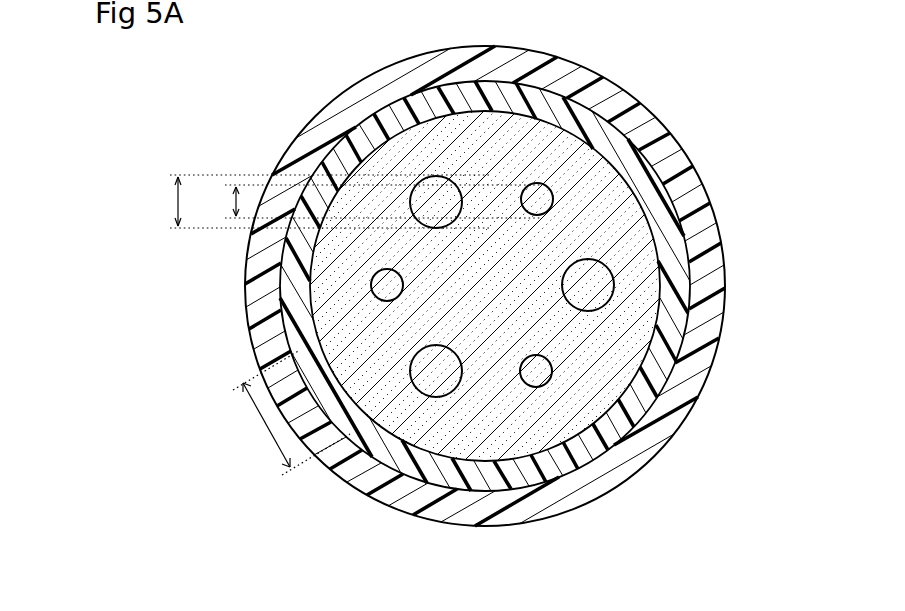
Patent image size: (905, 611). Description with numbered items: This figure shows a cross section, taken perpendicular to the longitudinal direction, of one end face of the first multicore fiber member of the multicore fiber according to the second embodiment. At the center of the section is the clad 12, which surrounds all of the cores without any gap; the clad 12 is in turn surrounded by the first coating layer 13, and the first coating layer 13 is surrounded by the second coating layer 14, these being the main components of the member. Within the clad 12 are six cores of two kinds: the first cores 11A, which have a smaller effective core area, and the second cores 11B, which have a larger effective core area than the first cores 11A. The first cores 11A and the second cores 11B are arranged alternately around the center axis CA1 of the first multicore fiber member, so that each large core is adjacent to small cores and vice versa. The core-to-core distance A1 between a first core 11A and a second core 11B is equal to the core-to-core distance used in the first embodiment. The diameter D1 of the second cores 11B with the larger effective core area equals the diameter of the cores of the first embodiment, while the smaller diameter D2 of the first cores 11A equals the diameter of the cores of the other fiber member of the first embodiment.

The first cores 11A is at (537, 185).
The second cores 11B is at (436, 178).
The clad 12 is at (597, 165).
The first coating layer 13 is at (632, 178).
The second coating layer 14 is at (680, 187).
The center axis CA1 is at (485, 283).
The diameter D1 is at (176, 203).
The diameter D2 is at (234, 203).
The core-to-core distance A1 is at (268, 438).